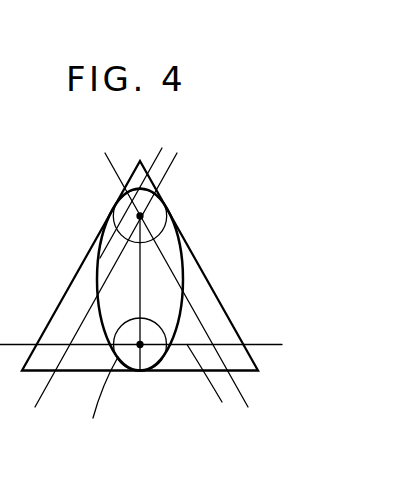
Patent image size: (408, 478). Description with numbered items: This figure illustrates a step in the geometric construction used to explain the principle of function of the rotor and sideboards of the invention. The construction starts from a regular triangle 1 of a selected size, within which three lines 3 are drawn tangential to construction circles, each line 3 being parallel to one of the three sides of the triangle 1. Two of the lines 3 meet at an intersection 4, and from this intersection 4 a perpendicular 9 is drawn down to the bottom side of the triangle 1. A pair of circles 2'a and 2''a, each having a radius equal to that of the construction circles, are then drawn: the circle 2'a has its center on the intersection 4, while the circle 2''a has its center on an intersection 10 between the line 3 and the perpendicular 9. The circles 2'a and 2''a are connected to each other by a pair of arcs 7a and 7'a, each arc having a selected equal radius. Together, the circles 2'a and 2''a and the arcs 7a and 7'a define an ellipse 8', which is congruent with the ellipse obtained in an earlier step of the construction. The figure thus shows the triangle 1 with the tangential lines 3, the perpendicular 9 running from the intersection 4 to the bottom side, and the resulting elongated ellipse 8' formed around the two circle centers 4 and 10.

The regular triangle 1 is at (68, 372).
The circle 2'a is at (143, 185).
The circle 2''a is at (101, 405).
The line 3 is at (118, 240).
The intersection 4 is at (140, 216).
The arc 7a is at (100, 313).
The arc 7'a is at (209, 280).
The ellipse 8' is at (87, 246).
The perpendicular 9 is at (142, 268).
The intersection 10 is at (140, 344).